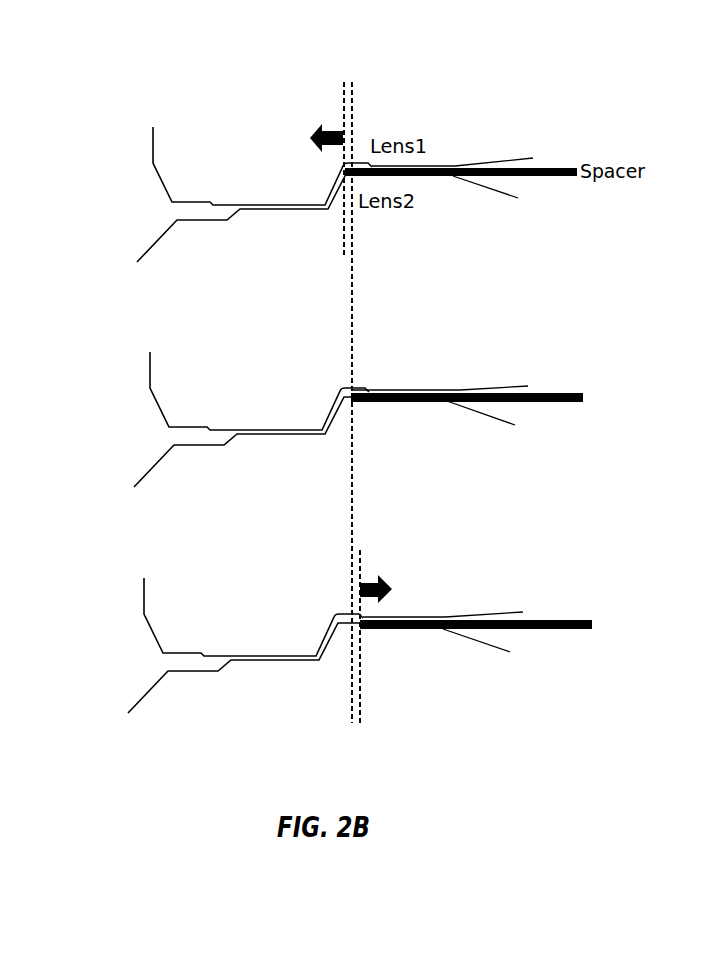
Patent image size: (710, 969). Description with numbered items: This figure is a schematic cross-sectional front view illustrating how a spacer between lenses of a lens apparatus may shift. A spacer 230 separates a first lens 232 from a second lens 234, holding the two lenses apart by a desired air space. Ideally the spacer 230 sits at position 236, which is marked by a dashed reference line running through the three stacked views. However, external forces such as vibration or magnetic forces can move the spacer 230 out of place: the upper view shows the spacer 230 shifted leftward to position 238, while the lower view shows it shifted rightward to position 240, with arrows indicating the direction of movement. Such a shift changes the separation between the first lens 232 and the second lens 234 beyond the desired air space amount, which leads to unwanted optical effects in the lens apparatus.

The spacer 230 is at (560, 177).
The first lens 232 is at (492, 163).
The second lens 234 is at (487, 187).
The position 236 is at (352, 310).
The position 238 is at (343, 93).
The position 240 is at (360, 712).